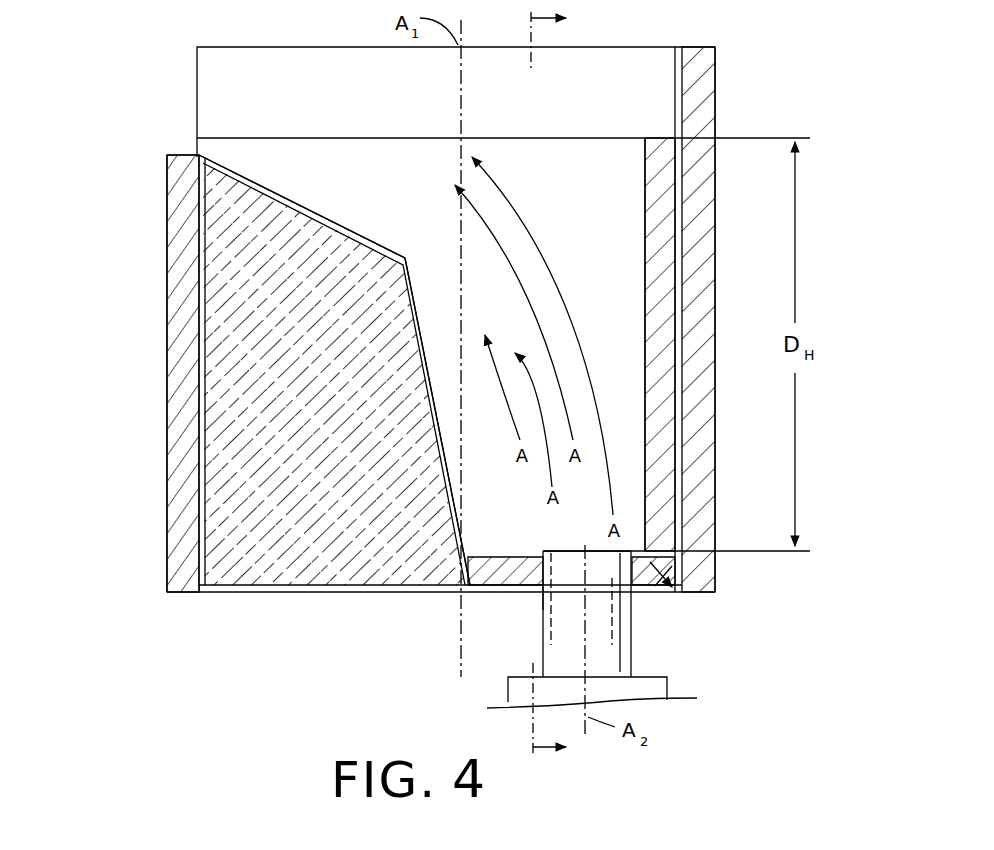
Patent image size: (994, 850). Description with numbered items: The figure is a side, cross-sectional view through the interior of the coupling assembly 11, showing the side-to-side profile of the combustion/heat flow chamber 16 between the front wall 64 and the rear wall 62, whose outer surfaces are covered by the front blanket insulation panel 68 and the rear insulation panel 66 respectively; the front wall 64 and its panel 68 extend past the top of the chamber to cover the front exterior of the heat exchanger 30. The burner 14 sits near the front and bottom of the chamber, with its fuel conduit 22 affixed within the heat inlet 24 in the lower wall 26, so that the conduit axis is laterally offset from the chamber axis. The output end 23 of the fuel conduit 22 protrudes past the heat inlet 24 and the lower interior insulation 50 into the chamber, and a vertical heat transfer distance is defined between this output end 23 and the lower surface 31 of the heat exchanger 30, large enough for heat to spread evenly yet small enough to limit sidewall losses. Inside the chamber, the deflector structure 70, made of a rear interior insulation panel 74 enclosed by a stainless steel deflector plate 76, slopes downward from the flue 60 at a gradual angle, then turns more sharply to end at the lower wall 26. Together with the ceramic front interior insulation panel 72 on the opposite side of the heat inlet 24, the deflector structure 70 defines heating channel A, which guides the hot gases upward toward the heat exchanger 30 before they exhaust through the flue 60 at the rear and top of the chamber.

The coupling assembly 11 is at (92, 207).
The burner 14 is at (520, 690).
The combustion/heat flow chamber 16 is at (579, 156).
The fuel conduit 22 is at (618, 626).
The output end 23 is at (545, 551).
The heat inlet 24 is at (538, 599).
The lower wall 26 is at (298, 592).
The heat exchanger 30 is at (297, 45).
The lower surface 31 is at (318, 140).
The lower interior insulation 50 is at (650, 562).
The flue 60 is at (195, 148).
The rear wall 62 is at (170, 283).
The front wall 64 is at (683, 233).
The rear insulation panel 66 is at (167, 392).
The front blanket insulation panel 68 is at (715, 298).
The deflector structure 70 is at (360, 210).
The front interior insulation panel 72 is at (645, 268).
The rear interior insulation panel 74 is at (364, 268).
The deflector plate 76 is at (418, 318).